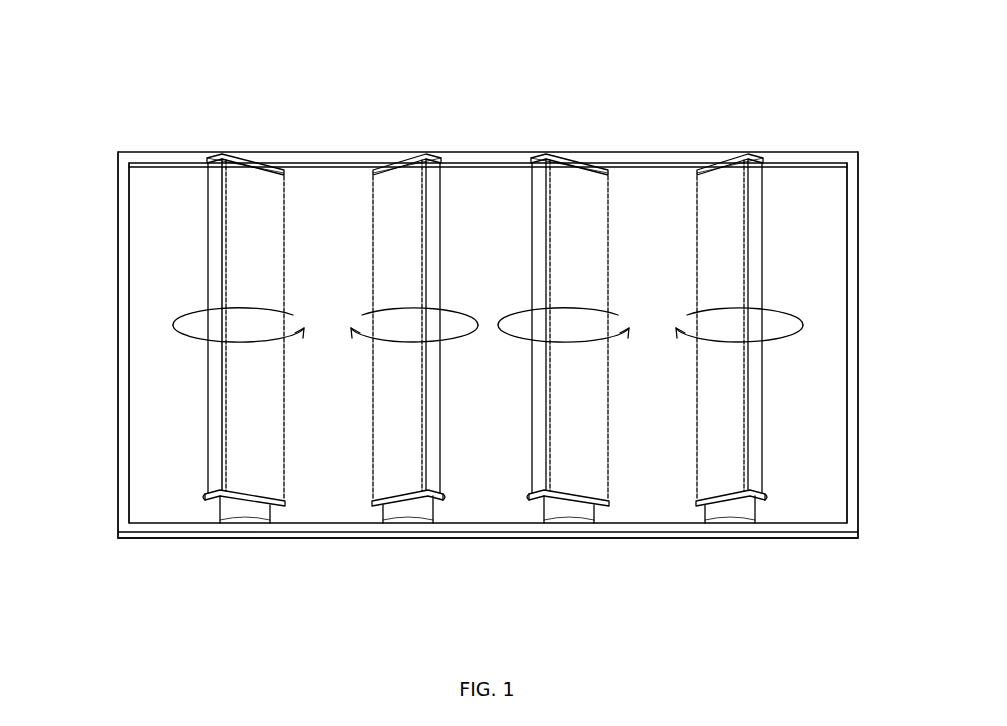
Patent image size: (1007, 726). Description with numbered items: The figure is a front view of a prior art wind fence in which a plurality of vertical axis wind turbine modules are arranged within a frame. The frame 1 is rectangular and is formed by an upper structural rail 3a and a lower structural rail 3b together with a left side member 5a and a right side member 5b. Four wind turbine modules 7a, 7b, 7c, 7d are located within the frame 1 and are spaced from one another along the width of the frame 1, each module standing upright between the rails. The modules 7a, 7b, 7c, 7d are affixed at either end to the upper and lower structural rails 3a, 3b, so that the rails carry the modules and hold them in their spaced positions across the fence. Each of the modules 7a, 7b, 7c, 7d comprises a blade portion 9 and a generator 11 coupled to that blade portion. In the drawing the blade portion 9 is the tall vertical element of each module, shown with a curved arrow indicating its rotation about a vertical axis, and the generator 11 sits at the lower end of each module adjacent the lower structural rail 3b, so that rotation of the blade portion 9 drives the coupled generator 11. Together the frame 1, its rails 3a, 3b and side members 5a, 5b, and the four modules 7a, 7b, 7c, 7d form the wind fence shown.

The frame 1 is at (333, 97).
The upper structural rail 3a is at (496, 158).
The lower structural rail 3b is at (487, 528).
The left side member 5a is at (127, 340).
The right side member 5b is at (855, 342).
The wind turbine module 7a is at (223, 379).
The wind turbine module 7b is at (389, 405).
The wind turbine module 7c is at (563, 405).
The wind turbine module 7d is at (711, 405).
The blade portion 9 is at (249, 230).
The generator 11 is at (237, 505).